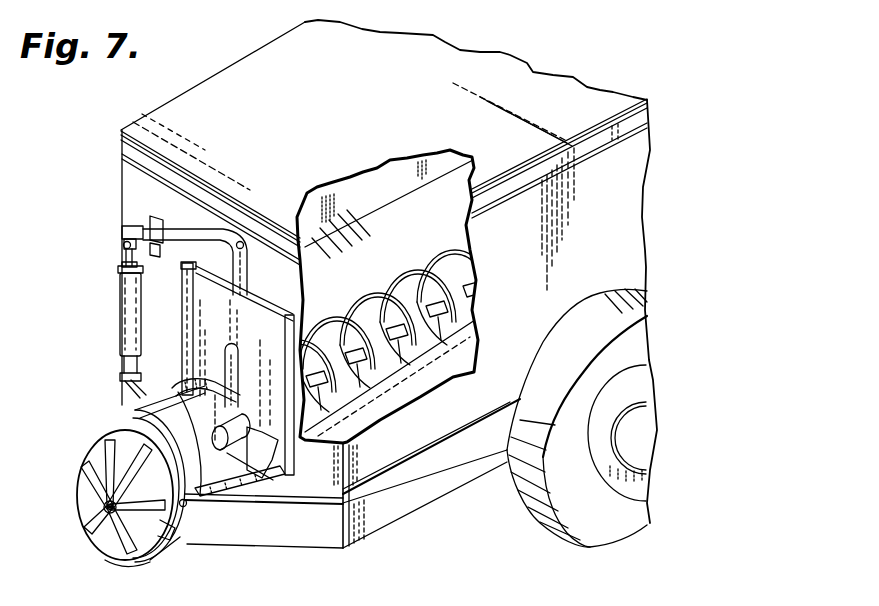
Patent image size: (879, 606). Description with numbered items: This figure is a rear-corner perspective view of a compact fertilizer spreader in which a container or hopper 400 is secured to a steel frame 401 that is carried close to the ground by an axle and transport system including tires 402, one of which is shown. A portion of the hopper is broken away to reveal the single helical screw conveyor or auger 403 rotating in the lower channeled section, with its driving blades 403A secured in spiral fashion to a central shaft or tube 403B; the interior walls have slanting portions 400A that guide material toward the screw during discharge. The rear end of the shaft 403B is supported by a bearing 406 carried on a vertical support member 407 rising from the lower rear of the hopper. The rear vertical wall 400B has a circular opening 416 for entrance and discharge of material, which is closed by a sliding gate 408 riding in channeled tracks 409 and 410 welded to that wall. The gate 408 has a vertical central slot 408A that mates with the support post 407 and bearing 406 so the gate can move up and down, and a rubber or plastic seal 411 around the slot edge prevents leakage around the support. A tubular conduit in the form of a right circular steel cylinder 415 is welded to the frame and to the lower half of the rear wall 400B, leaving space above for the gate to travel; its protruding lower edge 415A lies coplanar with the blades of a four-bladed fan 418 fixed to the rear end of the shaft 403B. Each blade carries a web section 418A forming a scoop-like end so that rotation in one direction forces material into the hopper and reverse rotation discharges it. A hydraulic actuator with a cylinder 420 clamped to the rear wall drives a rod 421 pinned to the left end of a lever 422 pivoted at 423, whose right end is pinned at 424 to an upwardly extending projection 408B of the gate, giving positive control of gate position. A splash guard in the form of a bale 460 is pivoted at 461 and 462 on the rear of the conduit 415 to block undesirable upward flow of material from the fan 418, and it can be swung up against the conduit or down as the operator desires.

The hopper 400 is at (162, 112).
The slanting portions 400A is at (380, 203).
The rear vertical wall 400B is at (122, 188).
The steel frame 401 is at (387, 510).
The tires 402 is at (513, 477).
The auger 403 is at (373, 282).
The driving blades 403A is at (337, 318).
The central shaft 403B is at (417, 277).
The bearing 406 is at (280, 468).
The vertical support member 407 is at (240, 510).
The sliding gate 408 is at (207, 311).
The vertical central slot 408A is at (236, 352).
The upwardly extending projection 408B is at (241, 283).
The channeled track 409 is at (184, 292).
The channeled track 410 is at (292, 318).
The seal 411 is at (230, 360).
The conduit 415 is at (80, 460).
The protruding lower edge 415A is at (128, 563).
The circular opening 416 is at (270, 432).
The fan 418 is at (80, 483).
The web section 418A is at (173, 534).
The cylinder 420 is at (124, 306).
The rod 421 is at (123, 262).
The lever 422 is at (133, 230).
The pivot 423 is at (180, 213).
The pin 424 is at (240, 236).
The bale 460 is at (105, 421).
The pivot 461 is at (186, 506).
The pivot 462 is at (82, 452).